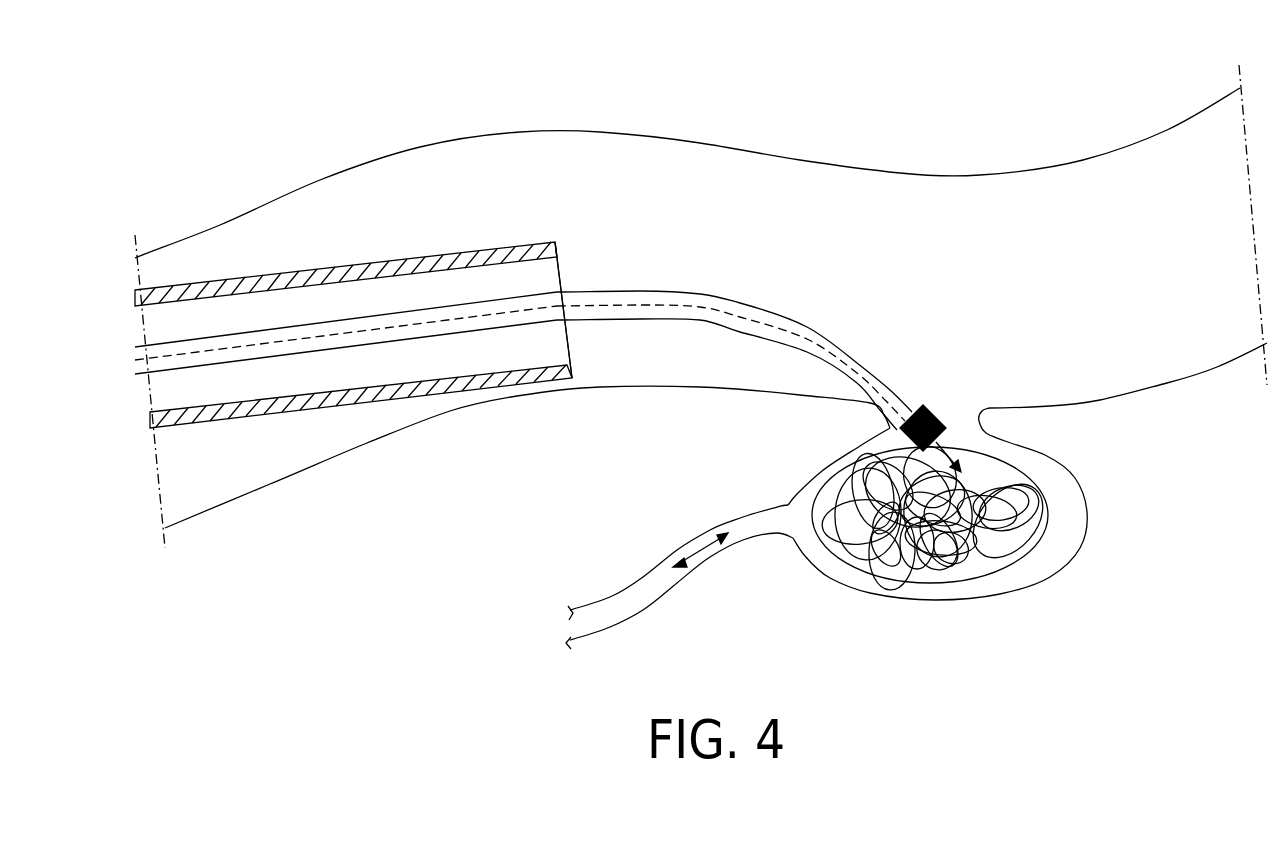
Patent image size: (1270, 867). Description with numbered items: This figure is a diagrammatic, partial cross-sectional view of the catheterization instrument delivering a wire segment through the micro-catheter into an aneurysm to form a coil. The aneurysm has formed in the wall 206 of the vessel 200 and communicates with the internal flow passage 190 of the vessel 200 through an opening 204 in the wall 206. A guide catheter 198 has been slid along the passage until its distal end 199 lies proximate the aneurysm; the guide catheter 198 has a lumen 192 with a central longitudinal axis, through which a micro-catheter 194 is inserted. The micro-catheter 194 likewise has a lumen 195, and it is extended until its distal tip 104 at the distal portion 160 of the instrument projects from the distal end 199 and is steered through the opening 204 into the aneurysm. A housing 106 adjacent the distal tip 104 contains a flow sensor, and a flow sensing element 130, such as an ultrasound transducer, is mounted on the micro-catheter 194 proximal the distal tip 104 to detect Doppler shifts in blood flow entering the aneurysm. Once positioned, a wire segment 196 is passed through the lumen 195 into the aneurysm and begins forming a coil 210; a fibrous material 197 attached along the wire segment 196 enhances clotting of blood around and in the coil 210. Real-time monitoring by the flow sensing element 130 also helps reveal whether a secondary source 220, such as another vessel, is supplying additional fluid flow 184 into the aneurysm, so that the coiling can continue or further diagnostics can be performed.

The distal tip 104 is at (942, 408).
The housing 106 is at (926, 406).
The flow sensing element 130 is at (862, 470).
The distal portion 160 is at (381, 240).
The fluid flow 184 is at (703, 552).
The internal flow passage 190 is at (1187, 274).
The lumen 192 is at (559, 344).
The micro-catheter 194 is at (718, 296).
The lumen 195 is at (779, 313).
The wire segment 196 is at (1055, 490).
The fibrous material 197 is at (988, 433).
The guide catheter 198 is at (525, 243).
The distal end 199 is at (557, 243).
The vessel 200 is at (1170, 130).
The opening 204 is at (884, 424).
The wall 206 is at (1220, 368).
The coil 210 is at (1072, 579).
The secondary source 220 is at (640, 580).